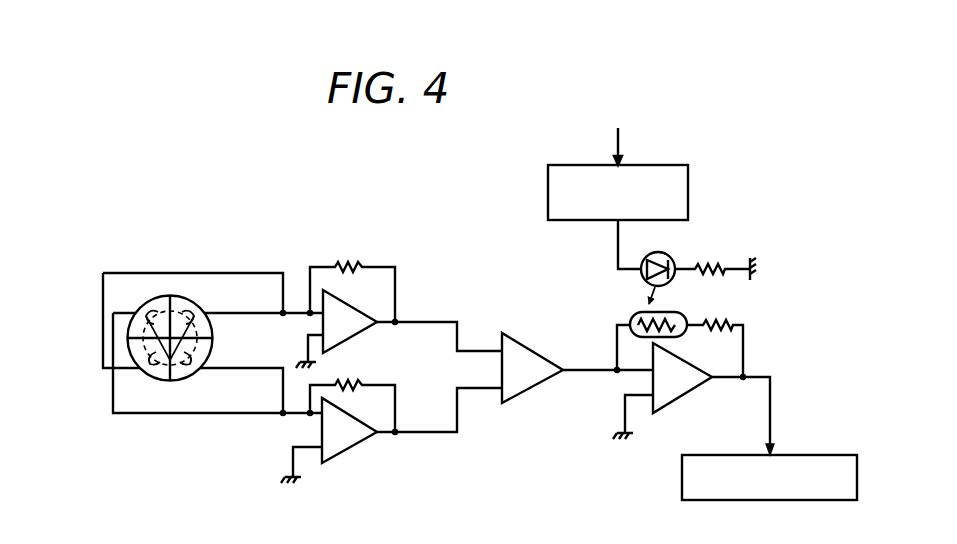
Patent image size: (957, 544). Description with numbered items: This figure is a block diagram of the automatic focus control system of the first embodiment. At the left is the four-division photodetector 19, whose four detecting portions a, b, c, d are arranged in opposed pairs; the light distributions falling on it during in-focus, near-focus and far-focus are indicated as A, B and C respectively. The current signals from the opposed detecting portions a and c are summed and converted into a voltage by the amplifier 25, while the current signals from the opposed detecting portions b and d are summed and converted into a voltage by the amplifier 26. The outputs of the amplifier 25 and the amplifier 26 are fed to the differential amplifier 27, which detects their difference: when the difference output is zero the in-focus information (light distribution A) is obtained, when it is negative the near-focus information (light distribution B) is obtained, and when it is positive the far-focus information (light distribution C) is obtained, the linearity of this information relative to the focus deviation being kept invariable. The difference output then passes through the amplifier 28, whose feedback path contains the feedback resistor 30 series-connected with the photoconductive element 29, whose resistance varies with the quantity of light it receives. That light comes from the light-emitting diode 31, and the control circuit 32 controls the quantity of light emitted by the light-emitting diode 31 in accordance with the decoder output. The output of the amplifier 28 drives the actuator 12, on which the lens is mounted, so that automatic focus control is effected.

The actuator 12 is at (810, 455).
The four-division photodetector 19 is at (179, 297).
The amplifier 25 is at (356, 330).
The amplifier 26 is at (352, 440).
The differential amplifier 27 is at (530, 358).
The amplifier 28 is at (683, 384).
The photoconductive element 29 is at (630, 313).
The feedback resistor 30 is at (717, 316).
The light-emitting diode 31 is at (673, 257).
The control circuit 32 is at (656, 165).
The detecting portion a is at (196, 309).
The detecting portion b is at (182, 378).
The detecting portion c is at (158, 376).
The detecting portion d is at (158, 303).
The light distribution during in-focus A is at (150, 350).
The light distribution during near-focus B is at (148, 371).
The light distribution during far-focus C is at (136, 308).